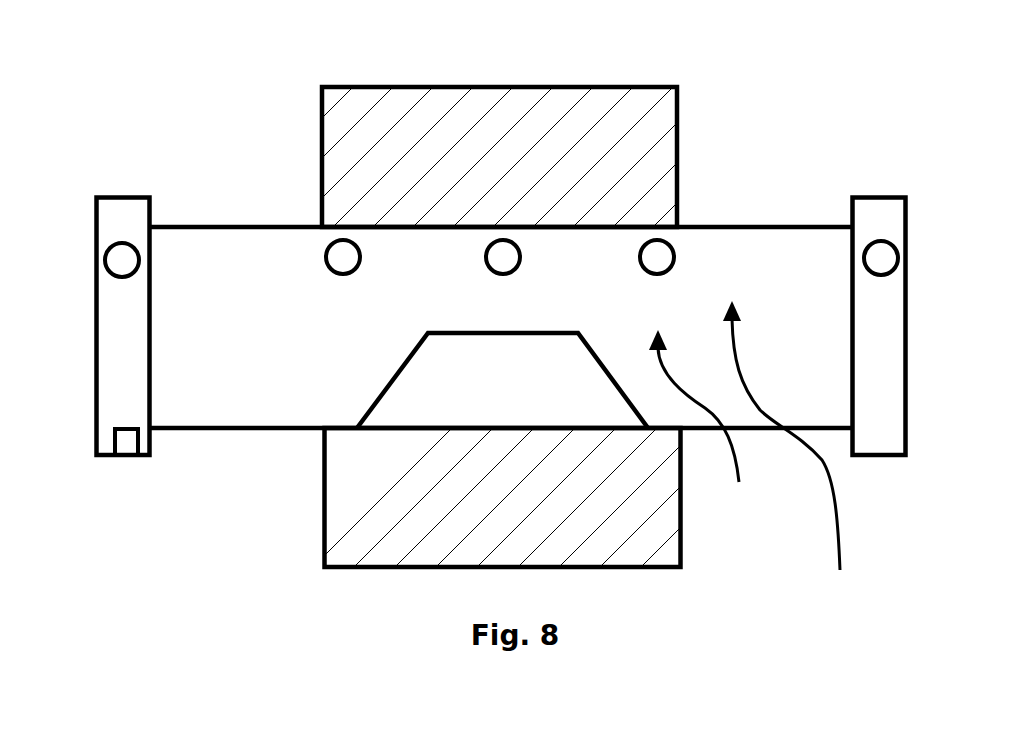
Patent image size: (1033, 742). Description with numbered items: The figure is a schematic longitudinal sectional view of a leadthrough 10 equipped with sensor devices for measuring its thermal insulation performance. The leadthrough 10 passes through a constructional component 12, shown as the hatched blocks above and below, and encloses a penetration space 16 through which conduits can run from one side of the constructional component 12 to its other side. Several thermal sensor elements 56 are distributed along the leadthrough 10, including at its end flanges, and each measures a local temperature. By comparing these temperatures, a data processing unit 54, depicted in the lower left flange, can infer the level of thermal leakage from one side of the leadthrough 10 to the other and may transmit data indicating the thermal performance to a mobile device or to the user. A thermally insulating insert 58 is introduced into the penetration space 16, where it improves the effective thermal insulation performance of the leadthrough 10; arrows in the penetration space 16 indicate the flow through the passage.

The leadthrough 10 is at (700, 426).
The constructional component 12 is at (663, 127).
The penetration space 16 is at (787, 456).
The data processing unit 54 is at (128, 438).
The thermal sensor elements 56 is at (122, 262).
The thermally insulating insert 58 is at (445, 383).